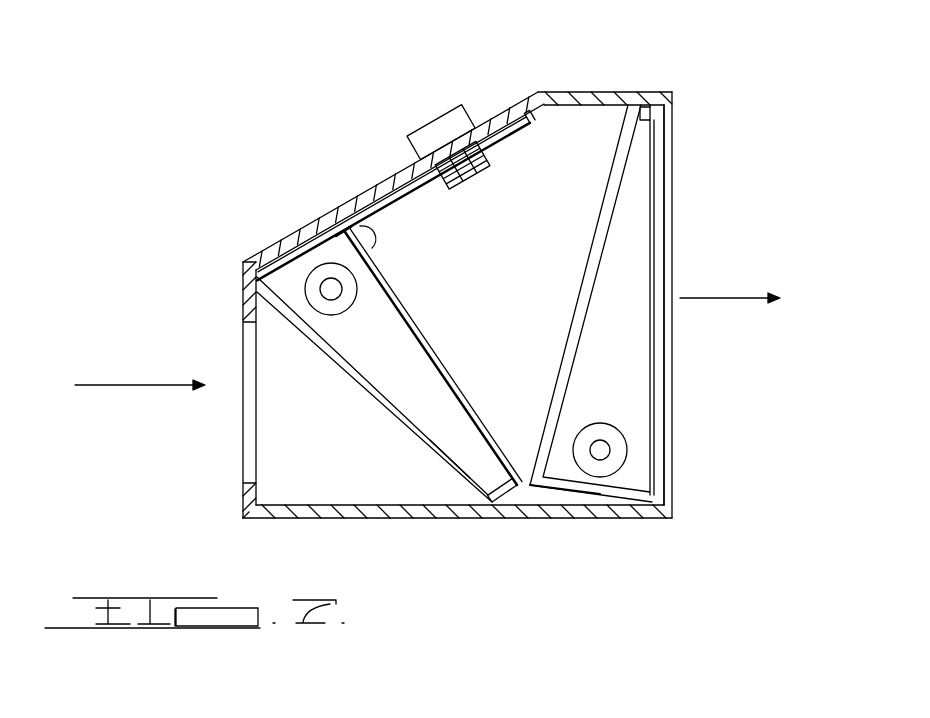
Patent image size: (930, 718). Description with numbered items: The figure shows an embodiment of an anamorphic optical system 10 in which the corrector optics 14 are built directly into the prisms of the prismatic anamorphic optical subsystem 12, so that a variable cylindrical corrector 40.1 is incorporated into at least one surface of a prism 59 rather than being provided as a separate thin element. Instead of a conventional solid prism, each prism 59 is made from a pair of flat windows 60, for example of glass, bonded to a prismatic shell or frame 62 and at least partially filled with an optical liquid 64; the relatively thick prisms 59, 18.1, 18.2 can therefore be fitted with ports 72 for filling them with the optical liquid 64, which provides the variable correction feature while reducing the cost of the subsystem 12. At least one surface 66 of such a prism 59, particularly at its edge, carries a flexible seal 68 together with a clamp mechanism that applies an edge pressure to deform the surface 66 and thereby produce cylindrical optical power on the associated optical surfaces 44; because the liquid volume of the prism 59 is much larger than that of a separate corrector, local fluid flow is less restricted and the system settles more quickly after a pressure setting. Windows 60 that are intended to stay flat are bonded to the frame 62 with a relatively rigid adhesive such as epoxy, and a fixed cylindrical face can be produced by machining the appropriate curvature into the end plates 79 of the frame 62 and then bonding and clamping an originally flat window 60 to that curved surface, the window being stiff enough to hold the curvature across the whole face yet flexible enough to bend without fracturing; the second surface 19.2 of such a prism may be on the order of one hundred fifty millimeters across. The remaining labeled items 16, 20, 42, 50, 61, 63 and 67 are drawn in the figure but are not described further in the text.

The anamorphic optical system 10 is at (655, 68).
The prismatic anamorphic optical subsystem 12 is at (472, 326).
The corrector optics 14 is at (499, 303).
The variable cylindrical corrector 40.1 is at (499, 303).
The inlet flow 16 is at (120, 385).
The outlet flow 20 is at (745, 298).
The first filter element 18.1 is at (379, 415).
The second filter element 18.2 is at (648, 527).
The second surface 19.2 is at (421, 314).
The filter layer 42 is at (489, 315).
The filter layer 50 is at (494, 354).
The optical liquid 64 is at (508, 390).
The optical surfaces 44 is at (502, 305).
The flat windows 60 is at (372, 400).
The prism 59 is at (412, 195).
The filter mat 61 is at (397, 177).
The prismatic shell or frame 62 is at (645, 106).
The clamp 63 is at (450, 190).
The surface 66 is at (345, 228).
The cover 67 is at (421, 136).
The flexible seal 68 is at (343, 232).
The ports 72 is at (315, 297).
The end plates 79 is at (447, 427).